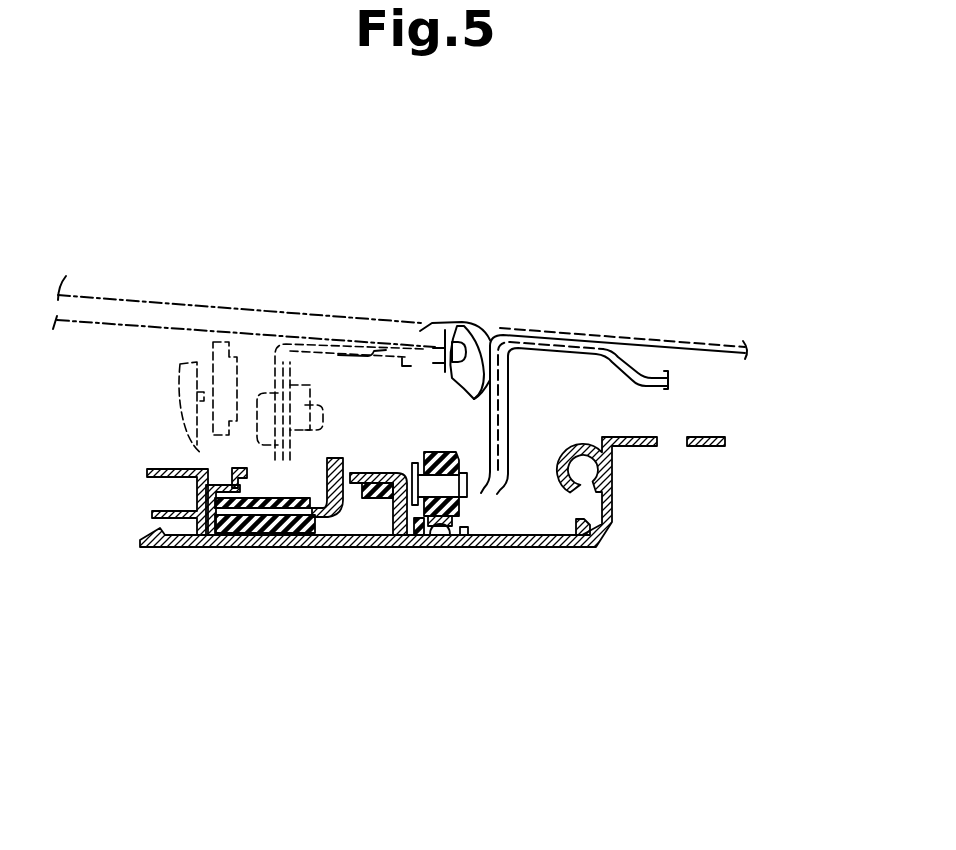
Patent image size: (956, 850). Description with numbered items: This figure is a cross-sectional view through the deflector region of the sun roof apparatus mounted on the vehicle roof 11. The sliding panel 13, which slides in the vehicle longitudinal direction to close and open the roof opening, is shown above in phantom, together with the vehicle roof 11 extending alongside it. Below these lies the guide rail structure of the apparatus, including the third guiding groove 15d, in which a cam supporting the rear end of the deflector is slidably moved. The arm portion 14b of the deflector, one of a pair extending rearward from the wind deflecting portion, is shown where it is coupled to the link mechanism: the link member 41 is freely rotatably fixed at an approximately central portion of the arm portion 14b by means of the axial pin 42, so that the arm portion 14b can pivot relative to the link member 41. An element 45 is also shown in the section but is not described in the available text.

The vehicle roof 11 is at (527, 328).
The sliding panel 13 is at (242, 311).
The arm portion 14b is at (440, 453).
The third guiding groove 15d is at (437, 540).
The link member 41 is at (420, 533).
The axial pin 42 is at (420, 482).
The washer plate 45 is at (463, 494).